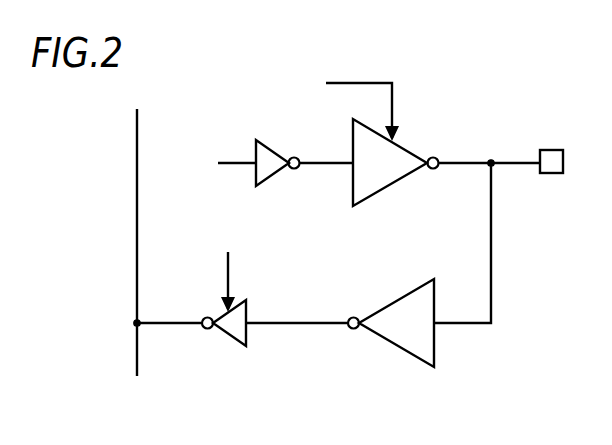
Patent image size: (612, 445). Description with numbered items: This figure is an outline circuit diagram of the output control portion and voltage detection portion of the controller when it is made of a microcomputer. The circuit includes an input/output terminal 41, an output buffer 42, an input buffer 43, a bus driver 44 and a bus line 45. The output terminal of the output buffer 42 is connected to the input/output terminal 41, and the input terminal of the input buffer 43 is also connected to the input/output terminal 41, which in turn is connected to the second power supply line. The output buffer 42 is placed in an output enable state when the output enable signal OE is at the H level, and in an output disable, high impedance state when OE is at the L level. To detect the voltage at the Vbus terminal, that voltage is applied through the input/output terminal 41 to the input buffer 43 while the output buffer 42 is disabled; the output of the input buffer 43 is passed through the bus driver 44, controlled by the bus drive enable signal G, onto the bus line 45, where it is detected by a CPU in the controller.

The input/output terminal 41 is at (551, 174).
The output buffer 42 is at (392, 192).
The input buffer 43 is at (390, 345).
The bus driver 44 is at (232, 346).
The bus line 45 is at (139, 200).